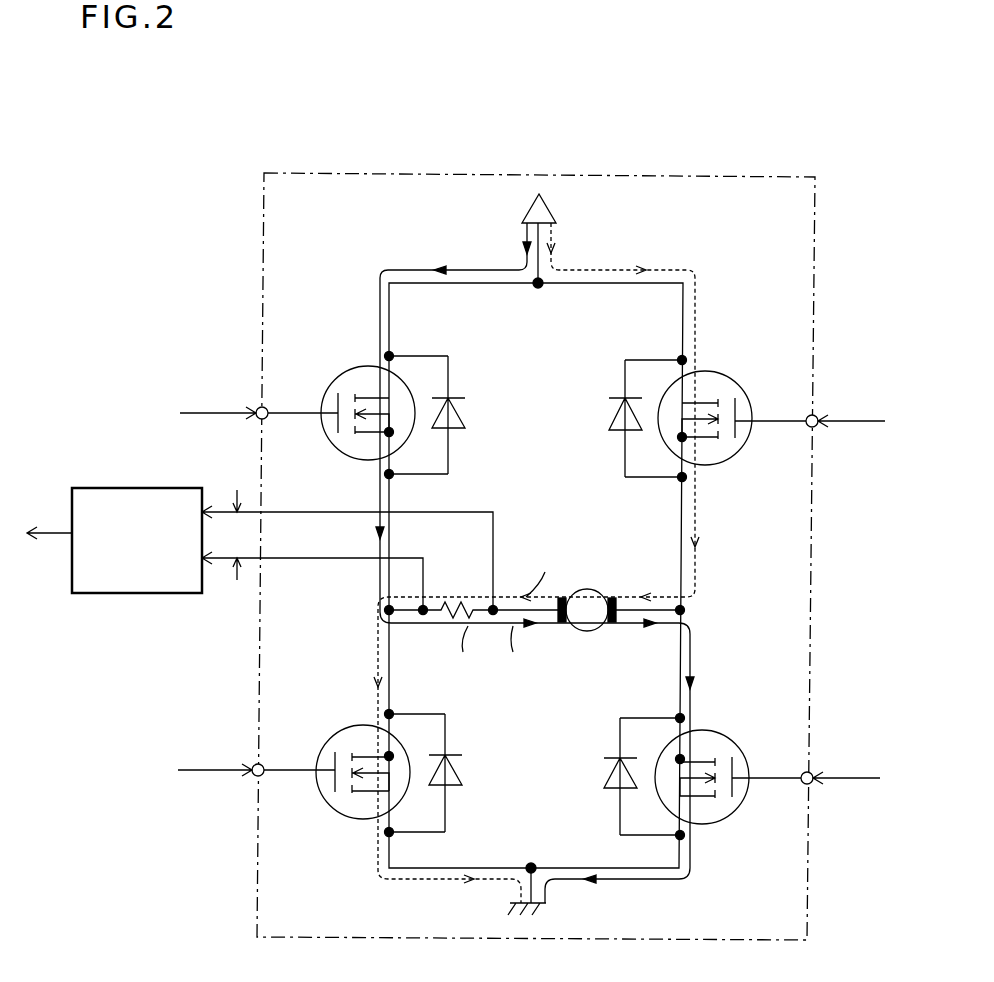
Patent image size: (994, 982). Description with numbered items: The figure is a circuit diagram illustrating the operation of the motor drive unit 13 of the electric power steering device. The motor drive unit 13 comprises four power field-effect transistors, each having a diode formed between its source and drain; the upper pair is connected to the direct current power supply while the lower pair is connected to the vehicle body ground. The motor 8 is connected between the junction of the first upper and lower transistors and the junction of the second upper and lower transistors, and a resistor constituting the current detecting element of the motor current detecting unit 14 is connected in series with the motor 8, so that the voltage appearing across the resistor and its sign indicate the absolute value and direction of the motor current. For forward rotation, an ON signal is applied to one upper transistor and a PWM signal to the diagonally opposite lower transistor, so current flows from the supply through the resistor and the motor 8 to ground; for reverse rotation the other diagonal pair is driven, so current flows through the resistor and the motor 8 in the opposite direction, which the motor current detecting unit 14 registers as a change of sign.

The motor drive unit 13 is at (505, 174).
The motor current detecting unit 14 is at (138, 488).
The motor 8 is at (587, 632).